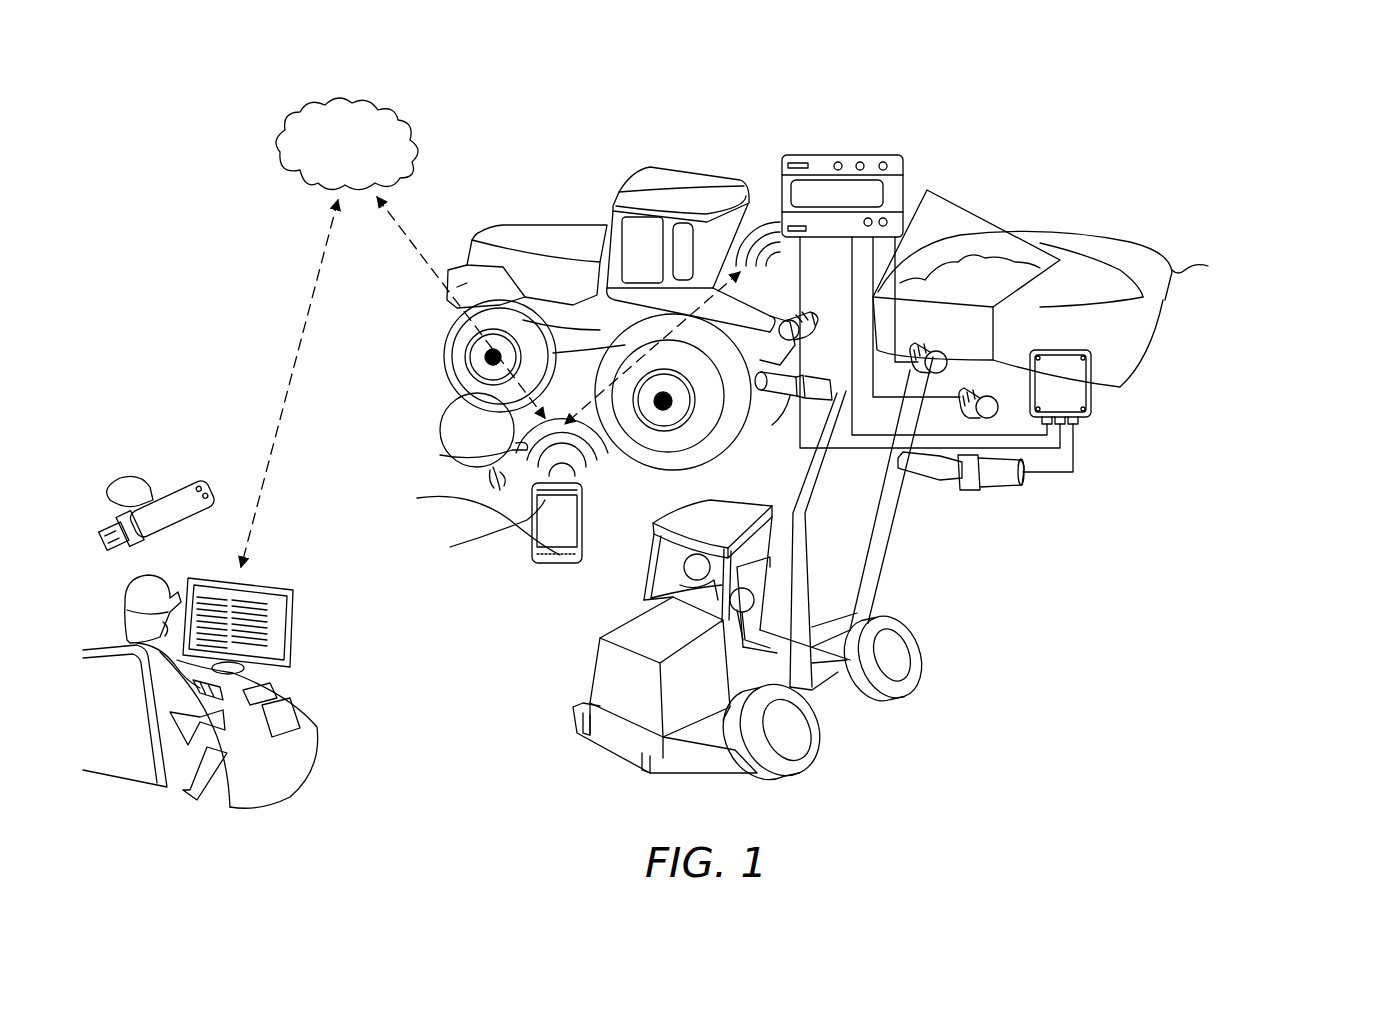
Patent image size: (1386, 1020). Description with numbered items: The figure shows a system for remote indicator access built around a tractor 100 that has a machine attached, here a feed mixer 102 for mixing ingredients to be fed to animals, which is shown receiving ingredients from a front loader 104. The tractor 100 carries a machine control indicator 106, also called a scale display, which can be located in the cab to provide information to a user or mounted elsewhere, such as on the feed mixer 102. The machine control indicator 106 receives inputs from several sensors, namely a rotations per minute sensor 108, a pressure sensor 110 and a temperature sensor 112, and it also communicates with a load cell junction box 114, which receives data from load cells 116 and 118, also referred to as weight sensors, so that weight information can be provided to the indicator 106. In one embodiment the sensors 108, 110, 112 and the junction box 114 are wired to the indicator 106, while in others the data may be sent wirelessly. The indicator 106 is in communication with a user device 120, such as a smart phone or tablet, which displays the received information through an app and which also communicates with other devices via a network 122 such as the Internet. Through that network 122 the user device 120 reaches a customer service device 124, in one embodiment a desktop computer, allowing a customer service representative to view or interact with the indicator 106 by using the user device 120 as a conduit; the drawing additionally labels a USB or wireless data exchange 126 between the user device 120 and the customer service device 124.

The tractor 100 is at (644, 165).
The feed mixer 102 is at (1322, 254).
The front loader 104 is at (822, 692).
The machine control indicator 106 is at (827, 111).
The rotations per minute (RPM) sensor 108 is at (1117, 170).
The pressure sensor 110 is at (1190, 213).
The temperature sensor 112 is at (1266, 326).
The load cell junction box 114 is at (1093, 382).
The load cell 116 is at (777, 403).
The load cells 118 is at (968, 490).
The user device 120 is at (588, 512).
The network 122 is at (357, 96).
The customer service device 124 is at (290, 576).
The USB or wireless data exchange 126 is at (141, 400).